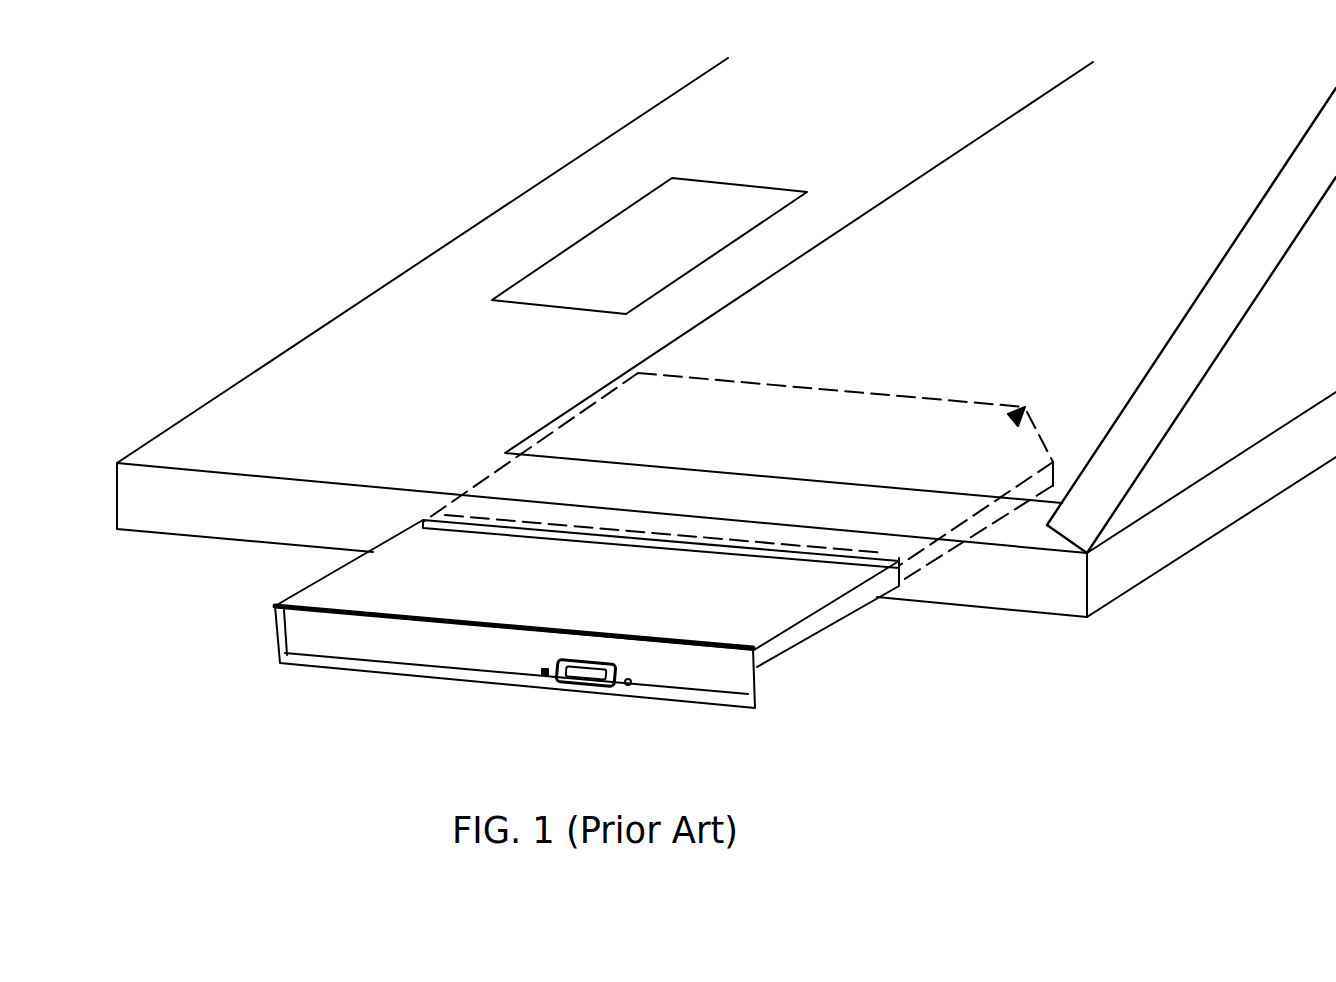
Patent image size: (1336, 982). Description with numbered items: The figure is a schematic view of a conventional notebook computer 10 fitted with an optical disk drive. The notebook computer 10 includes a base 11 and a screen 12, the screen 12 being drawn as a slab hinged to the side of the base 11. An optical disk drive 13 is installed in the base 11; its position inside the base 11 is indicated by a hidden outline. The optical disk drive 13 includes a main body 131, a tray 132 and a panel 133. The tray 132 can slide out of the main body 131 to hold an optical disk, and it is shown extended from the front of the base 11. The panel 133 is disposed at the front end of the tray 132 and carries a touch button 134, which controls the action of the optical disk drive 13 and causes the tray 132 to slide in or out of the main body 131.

The notebook computer 10 is at (713, 337).
The base 11 is at (162, 517).
The screen 12 is at (1158, 478).
The optical disk drive 13 is at (664, 563).
The main body 131 is at (612, 418).
The tray 132 is at (808, 610).
The panel 133 is at (742, 683).
The touch button 134 is at (582, 693).